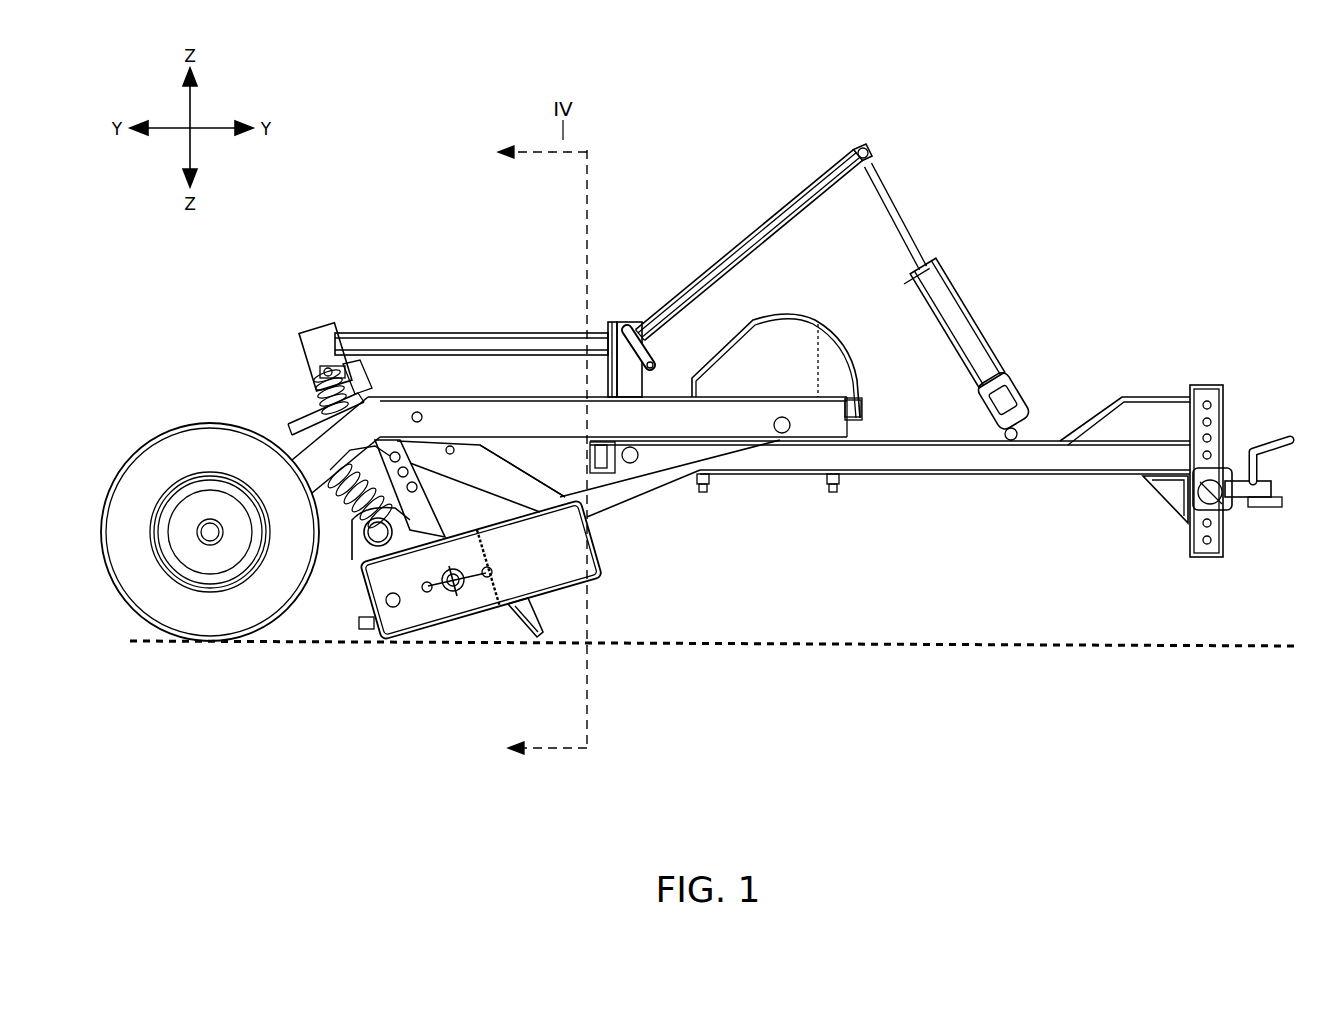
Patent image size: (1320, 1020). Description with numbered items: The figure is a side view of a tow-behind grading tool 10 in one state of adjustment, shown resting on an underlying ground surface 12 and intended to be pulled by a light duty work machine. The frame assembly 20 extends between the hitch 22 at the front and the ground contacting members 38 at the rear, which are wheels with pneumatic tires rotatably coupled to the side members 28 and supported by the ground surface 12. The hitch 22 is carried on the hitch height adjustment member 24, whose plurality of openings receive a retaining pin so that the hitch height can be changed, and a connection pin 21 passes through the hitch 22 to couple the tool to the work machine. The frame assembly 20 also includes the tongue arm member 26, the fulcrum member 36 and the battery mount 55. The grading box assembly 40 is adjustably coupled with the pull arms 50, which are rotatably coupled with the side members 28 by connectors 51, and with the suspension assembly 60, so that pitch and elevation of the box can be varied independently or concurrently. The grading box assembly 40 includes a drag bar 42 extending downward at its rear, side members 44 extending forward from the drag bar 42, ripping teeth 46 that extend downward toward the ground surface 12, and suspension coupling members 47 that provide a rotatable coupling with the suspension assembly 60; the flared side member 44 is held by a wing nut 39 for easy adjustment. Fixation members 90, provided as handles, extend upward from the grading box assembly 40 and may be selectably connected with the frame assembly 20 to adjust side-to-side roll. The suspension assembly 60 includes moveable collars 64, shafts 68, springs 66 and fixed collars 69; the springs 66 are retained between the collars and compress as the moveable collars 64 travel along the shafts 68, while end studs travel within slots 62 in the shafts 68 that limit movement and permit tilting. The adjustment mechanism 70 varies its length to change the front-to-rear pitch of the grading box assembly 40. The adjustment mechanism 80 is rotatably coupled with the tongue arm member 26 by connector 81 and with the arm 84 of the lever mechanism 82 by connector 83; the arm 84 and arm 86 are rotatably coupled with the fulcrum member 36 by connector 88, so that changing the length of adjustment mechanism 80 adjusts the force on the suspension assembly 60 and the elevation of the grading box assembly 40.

The grading tool 10 is at (1172, 140).
The underlying ground surface 12 is at (1272, 645).
The frame assembly 20 is at (797, 500).
The connection pin 21 is at (1288, 448).
The hitch 22 is at (1238, 475).
The hitch height adjustment member 24 is at (1225, 392).
The tongue arm member 26 is at (1052, 440).
The side member 28 is at (485, 405).
The fulcrum member 36 is at (648, 380).
The ground contacting member 38 is at (165, 448).
The wing nut 39 is at (450, 591).
The grading box assembly 40 is at (620, 592).
The drag bar 42 is at (368, 633).
The side member 44 is at (485, 622).
The ripping teeth 46 is at (538, 638).
The suspension coupling member 47 is at (420, 520).
The pull arm 50 is at (668, 482).
The connector 51 is at (778, 416).
The battery mount 55 is at (798, 303).
The suspension assembly 60 is at (282, 385).
The slot 62 is at (310, 404).
The moveable collar 64 is at (322, 335).
The spring 66 is at (338, 495).
The shaft 68 is at (360, 545).
The fixed collar 69 is at (430, 495).
The adjustment mechanism 70 is at (500, 466).
The adjustment mechanism 80 is at (965, 290).
The connector 81 is at (1028, 408).
The lever mechanism 82 is at (540, 298).
The connector 83 is at (865, 146).
The arm 84 is at (792, 192).
The arm 86 is at (436, 332).
The connector 88 is at (630, 326).
The fixation member 90 is at (362, 370).